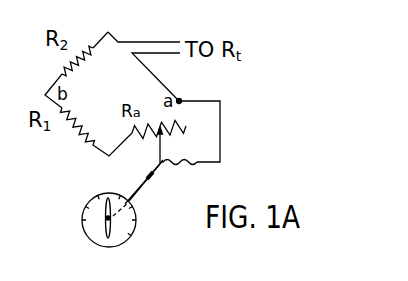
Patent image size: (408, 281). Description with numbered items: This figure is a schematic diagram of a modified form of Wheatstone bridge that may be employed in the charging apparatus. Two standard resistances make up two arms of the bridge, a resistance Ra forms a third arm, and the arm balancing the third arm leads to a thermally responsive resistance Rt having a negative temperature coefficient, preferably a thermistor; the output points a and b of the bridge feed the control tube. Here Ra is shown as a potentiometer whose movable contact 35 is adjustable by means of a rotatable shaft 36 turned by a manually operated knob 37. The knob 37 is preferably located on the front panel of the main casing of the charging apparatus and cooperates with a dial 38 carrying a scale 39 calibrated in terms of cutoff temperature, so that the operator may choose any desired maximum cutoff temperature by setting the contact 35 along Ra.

The movable contact 35 is at (158, 130).
The rotatable shaft 36 is at (141, 197).
The manually operated knob 37 is at (107, 233).
The dial 38 is at (130, 236).
The scale 39 is at (82, 219).